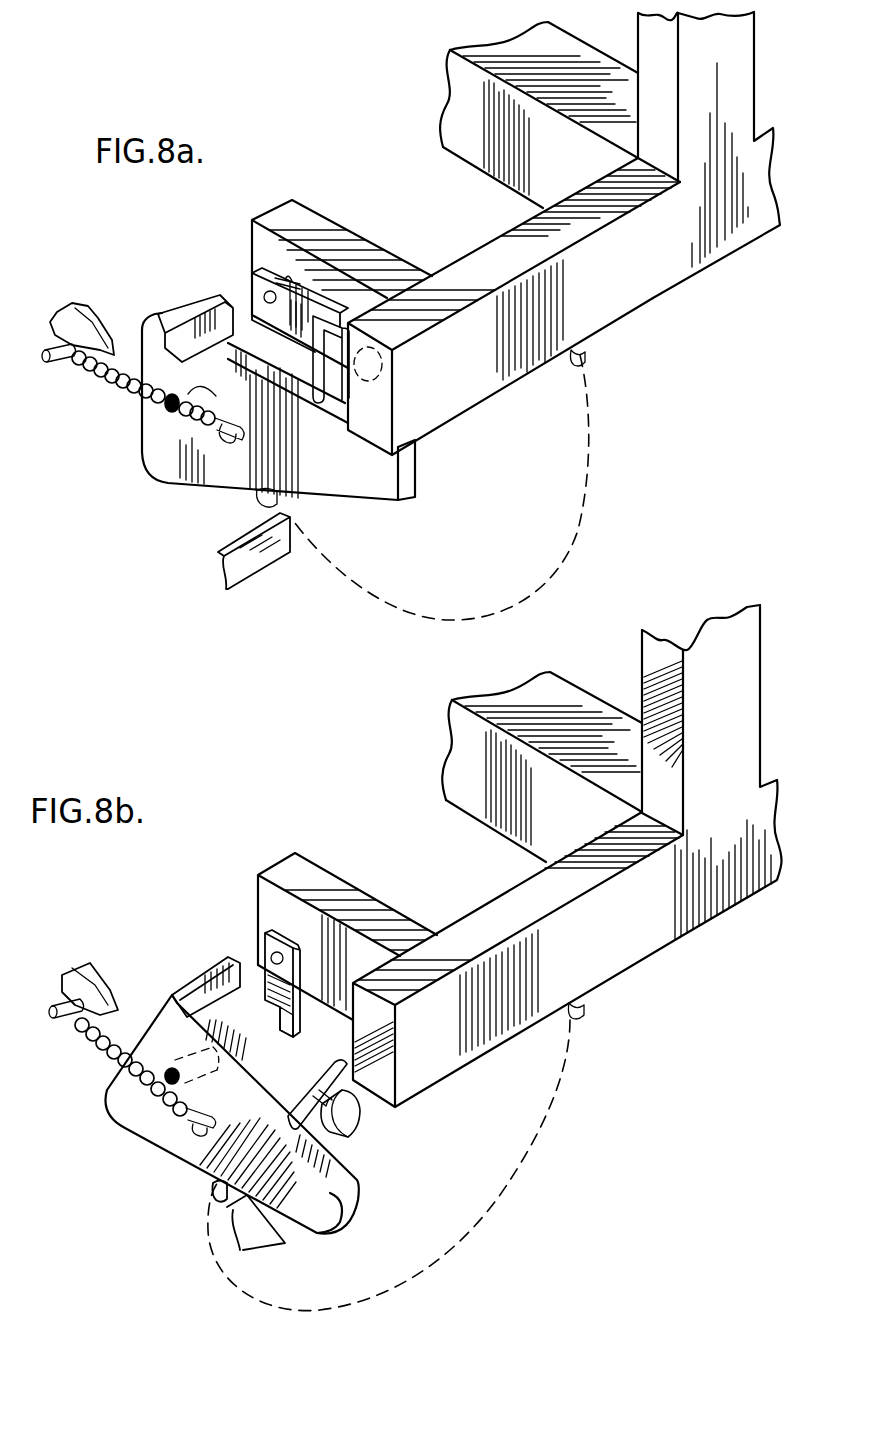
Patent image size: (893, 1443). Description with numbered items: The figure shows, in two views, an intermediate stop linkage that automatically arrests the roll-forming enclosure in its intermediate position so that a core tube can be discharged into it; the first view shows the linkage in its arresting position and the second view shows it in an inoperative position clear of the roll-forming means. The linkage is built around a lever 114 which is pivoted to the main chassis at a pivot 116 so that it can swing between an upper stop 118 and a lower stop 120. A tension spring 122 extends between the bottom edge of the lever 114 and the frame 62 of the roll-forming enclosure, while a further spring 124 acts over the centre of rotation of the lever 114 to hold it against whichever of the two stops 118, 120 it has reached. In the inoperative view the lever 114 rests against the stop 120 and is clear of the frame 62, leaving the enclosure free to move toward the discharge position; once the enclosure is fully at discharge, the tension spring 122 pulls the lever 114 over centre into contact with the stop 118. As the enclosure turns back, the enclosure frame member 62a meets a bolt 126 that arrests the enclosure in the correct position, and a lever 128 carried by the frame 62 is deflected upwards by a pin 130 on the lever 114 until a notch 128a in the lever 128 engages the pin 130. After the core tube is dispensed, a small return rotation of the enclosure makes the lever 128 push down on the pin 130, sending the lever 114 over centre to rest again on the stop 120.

In FIG. 8a, the frame 62 is at (516, 233).
In FIG. 8b, the frame 62 is at (520, 823).
In FIG. 8a, the enclosure frame member 62a is at (464, 267).
In FIG. 8b, the enclosure frame member 62a is at (465, 930).
In FIG. 8a, the lever 114 is at (363, 482).
In FIG. 8a, the pivot 116 is at (170, 415).
In FIG. 8b, the pivot 116 is at (152, 1115).
In FIG. 8a, the upper stop 118 is at (205, 302).
In FIG. 8b, the upper stop 118 is at (208, 968).
In FIG. 8a, the lower stop 120 is at (262, 553).
In FIG. 8b, the lower stop 120 is at (262, 1230).
In FIG. 8a, the tension spring 122 is at (589, 466).
In FIG. 8b, the tension spring 122 is at (508, 1185).
In FIG. 8a, the spring 124 is at (100, 372).
In FIG. 8b, the spring 124 is at (108, 1046).
In FIG. 8a, the bolt 126 is at (384, 359).
In FIG. 8b, the bolt 126 is at (370, 1122).
In FIG. 8a, the lever 128 is at (255, 272).
In FIG. 8b, the lever 128 is at (306, 1005).
In FIG. 8b, the notch 128a is at (276, 1022).
In FIG. 8a, the pin 130 is at (325, 402).
In FIG. 8b, the pin 130 is at (323, 1078).